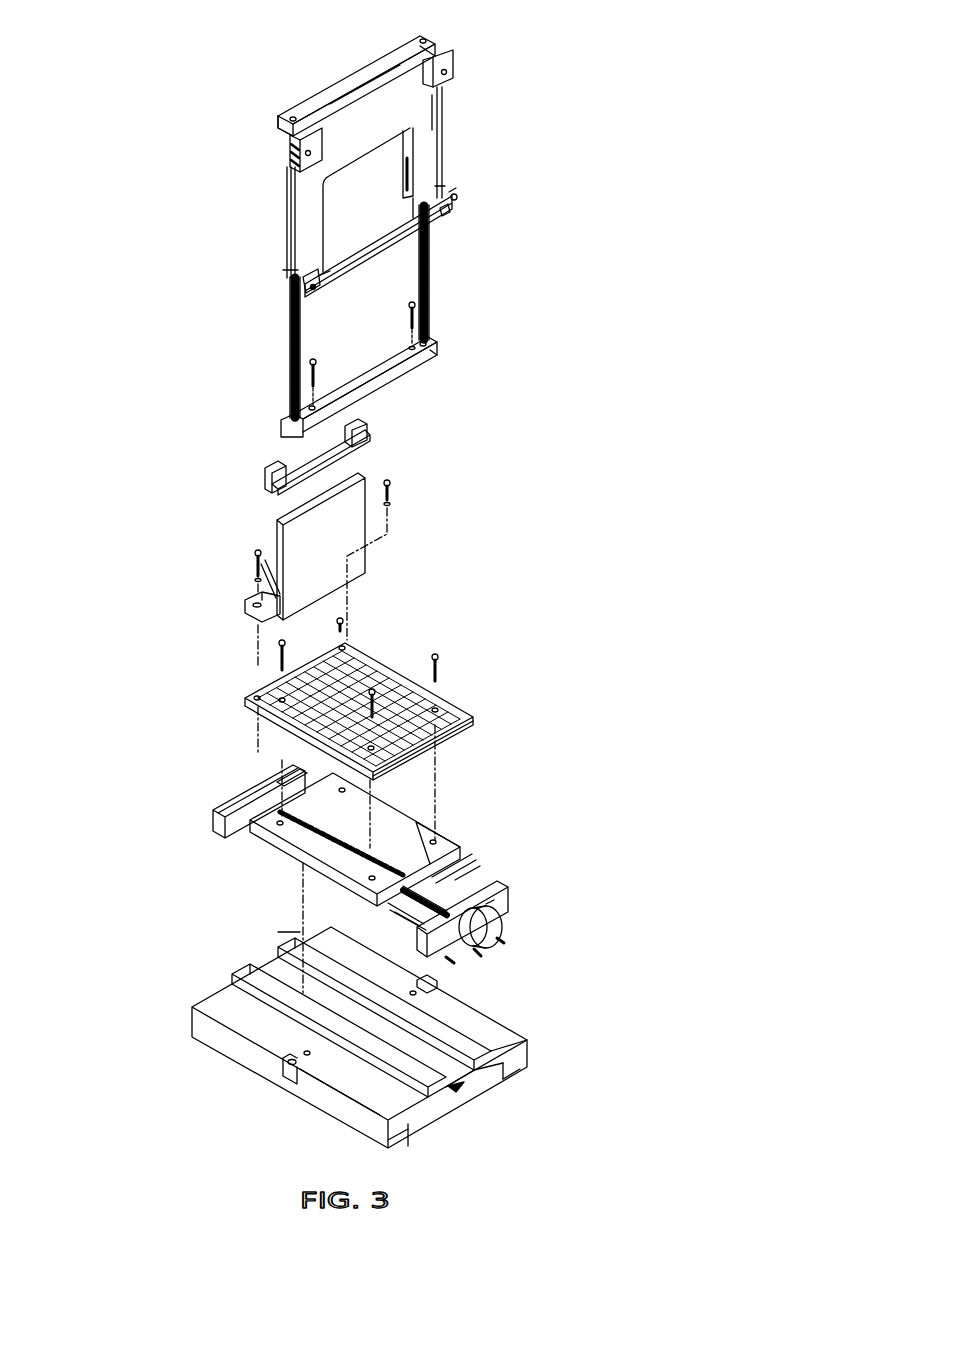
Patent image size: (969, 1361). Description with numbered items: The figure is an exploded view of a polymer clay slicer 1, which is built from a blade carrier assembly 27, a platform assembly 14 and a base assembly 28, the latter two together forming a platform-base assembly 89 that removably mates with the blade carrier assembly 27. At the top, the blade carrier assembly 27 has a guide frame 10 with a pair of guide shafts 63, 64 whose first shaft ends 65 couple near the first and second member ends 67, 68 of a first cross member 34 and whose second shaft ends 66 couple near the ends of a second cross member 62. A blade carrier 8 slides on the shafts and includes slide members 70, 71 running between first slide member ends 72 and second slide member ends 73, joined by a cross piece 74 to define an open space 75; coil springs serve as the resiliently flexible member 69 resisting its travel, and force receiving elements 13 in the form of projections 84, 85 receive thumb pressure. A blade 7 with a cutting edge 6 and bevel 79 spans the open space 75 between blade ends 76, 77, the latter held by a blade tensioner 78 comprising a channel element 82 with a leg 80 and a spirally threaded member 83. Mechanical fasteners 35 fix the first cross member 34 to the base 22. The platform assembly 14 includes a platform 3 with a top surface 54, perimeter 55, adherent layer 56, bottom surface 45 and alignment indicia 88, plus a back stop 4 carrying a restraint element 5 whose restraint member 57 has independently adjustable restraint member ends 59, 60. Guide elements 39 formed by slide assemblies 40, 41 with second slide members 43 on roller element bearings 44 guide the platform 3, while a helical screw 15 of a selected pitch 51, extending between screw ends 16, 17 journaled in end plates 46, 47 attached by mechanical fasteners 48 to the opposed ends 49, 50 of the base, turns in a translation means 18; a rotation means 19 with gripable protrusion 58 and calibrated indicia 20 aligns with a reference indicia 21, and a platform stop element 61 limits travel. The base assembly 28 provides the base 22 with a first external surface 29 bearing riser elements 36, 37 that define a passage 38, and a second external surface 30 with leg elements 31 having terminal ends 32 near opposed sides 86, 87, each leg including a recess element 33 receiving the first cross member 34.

The polymer clay slicer 1 is at (575, 198).
The blade carrier assembly 27 is at (114, 438).
The guide frame 10 is at (280, 335).
The second cross member 62 is at (400, 45).
The cross piece 74 is at (352, 120).
The second shaft end 66 is at (437, 38).
The second member end 68 is at (440, 55).
The force receiving elements 13 is at (376, 135).
The projection 84 is at (292, 167).
The projection 85 is at (455, 68).
The second slide member end 73 is at (450, 85).
The slide member 70 is at (298, 248).
The slide member 71 is at (436, 137).
The blade carrier 8 is at (431, 110).
The first slide member end 72 is at (432, 182).
The open space 75 is at (353, 205).
The cutting edge 6 is at (397, 258).
The blade 7 is at (360, 266).
The blade end 77 is at (399, 274).
The blade end 76 is at (314, 290).
The bevel 79 is at (344, 282).
The leg 80 is at (442, 214).
The blade tensioner 78 is at (458, 198).
The spirally threaded member 83 is at (454, 186).
The channel element 82 is at (447, 212).
The resiliently flexible member 69 is at (437, 267).
The guide shaft 63 is at (291, 377).
The guide shaft 64 is at (437, 306).
The first cross member 34 is at (442, 358).
The first shaft end 65 is at (292, 413).
The first member end 67 is at (278, 125).
The mechanical fasteners 35 is at (315, 362).
The platform-base assembly 89 is at (52, 443).
The platform assembly 14 is at (114, 848).
The restraint element 5 is at (372, 438).
The restraint member 57 is at (345, 456).
The restraint member end 59 is at (270, 487).
The restraint member end 60 is at (362, 430).
The back stop 4 is at (362, 496).
The platform 3 is at (468, 688).
The top surface 54 is at (395, 680).
The perimeter 55 is at (370, 650).
The adherent layer 56 is at (462, 738).
The alignment indicia 88 is at (318, 675).
The screw end 17 is at (258, 810).
The end plate 47 is at (290, 770).
The mechanical fasteners 48 is at (230, 797).
The translation means 18 is at (352, 838).
The roller element bearings 44 is at (425, 855).
The bottom surface 45 is at (460, 862).
The guide elements 39 is at (379, 873).
The slide assembly 41 is at (490, 867).
The second slide member 43 is at (463, 878).
The slide assembly 40 is at (375, 908).
The helical screw 15 is at (529, 867).
The pitch 51 is at (529, 867).
The screw end 16 is at (470, 895).
The end plate 46 is at (500, 886).
The platform stop element 61 is at (490, 908).
The rotation means 19 is at (495, 927).
The gripable protrusion 58 is at (498, 940).
The calibrated indicia 20 is at (481, 946).
The reference indicia 21 is at (400, 915).
The riser element 37 is at (290, 930).
The base assembly 28 is at (114, 1150).
The base 22 is at (345, 1117).
The riser element 36 is at (243, 976).
The opposed end 50 is at (262, 965).
The opposed side 87 is at (495, 1025).
The first external surface 29 is at (500, 1040).
The leg elements 31 is at (520, 1052).
The terminal end 32 is at (520, 1077).
The opposed end 49 is at (500, 1085).
The passage 38 is at (480, 1085).
The second external surface 30 is at (460, 1090).
The opposed side 86 is at (365, 1125).
The recess element 33 is at (285, 1078).